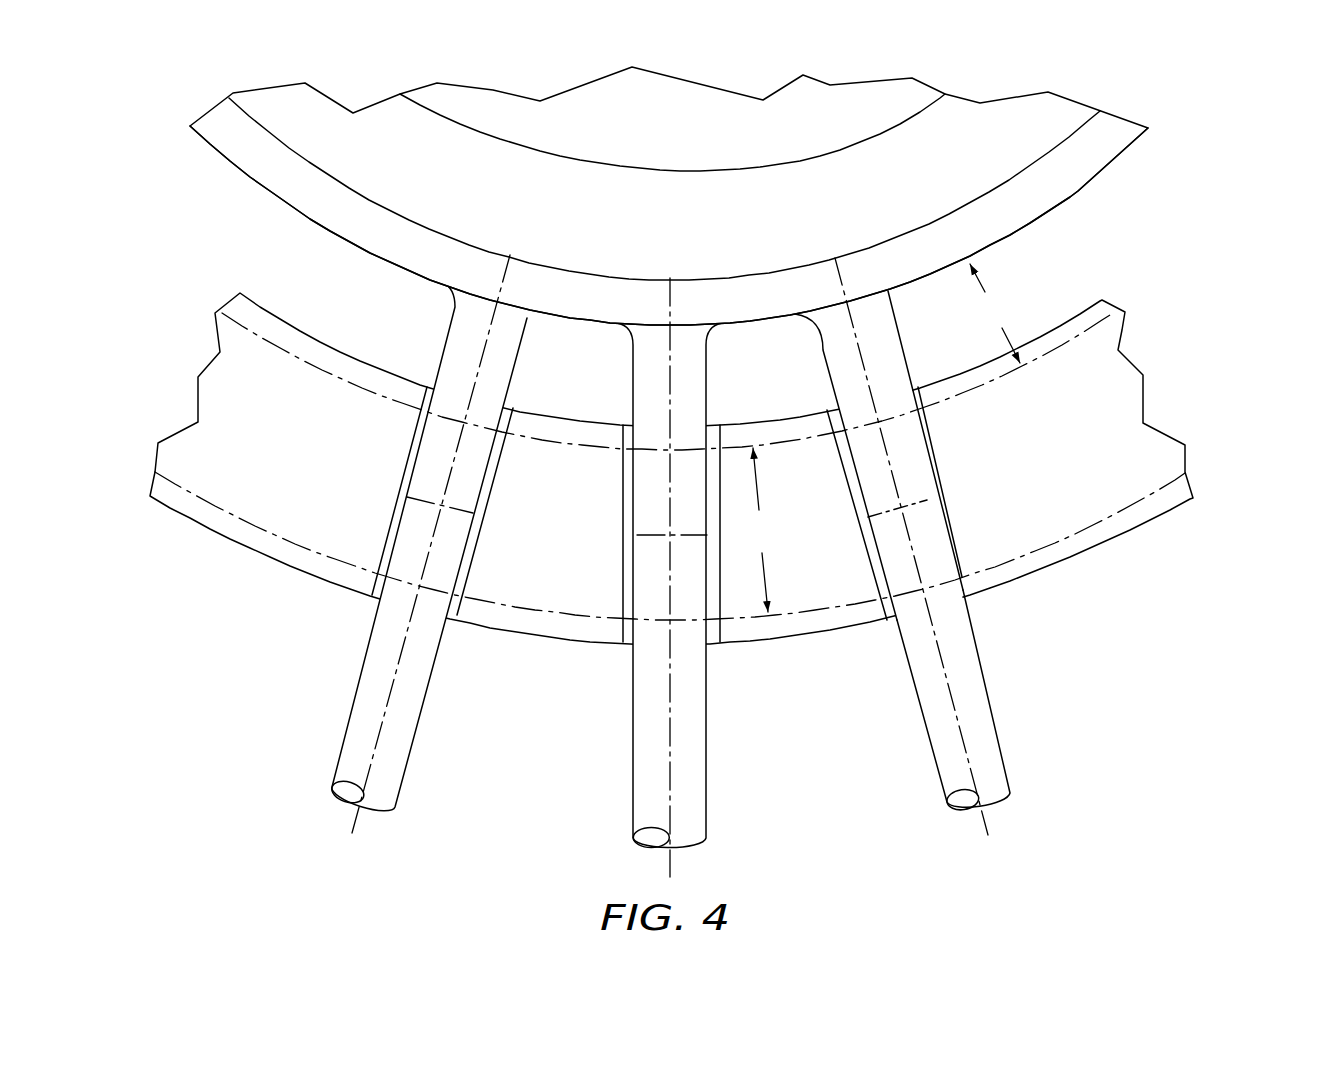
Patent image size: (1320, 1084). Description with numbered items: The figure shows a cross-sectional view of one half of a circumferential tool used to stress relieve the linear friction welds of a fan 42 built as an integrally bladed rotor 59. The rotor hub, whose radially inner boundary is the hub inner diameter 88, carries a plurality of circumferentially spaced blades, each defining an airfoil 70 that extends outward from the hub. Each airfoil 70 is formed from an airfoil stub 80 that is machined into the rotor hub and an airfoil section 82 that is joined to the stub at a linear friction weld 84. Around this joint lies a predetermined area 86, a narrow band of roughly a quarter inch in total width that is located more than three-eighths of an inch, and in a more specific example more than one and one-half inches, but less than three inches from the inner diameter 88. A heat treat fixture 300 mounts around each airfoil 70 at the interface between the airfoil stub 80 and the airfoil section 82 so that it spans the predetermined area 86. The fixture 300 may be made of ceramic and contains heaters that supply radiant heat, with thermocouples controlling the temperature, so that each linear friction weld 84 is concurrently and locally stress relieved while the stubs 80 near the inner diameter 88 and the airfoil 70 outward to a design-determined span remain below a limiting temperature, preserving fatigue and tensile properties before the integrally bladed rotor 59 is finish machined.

The fan 42 is at (705, 472).
The integrally bladed rotor 59 is at (669, 196).
The airfoil 70 is at (937, 531).
The airfoil stub 80 is at (890, 343).
The airfoil section 82 is at (978, 710).
The linear friction weld 84 is at (912, 502).
The predetermined area 86 is at (822, 488).
The hub inner diameter 88 is at (1078, 192).
The heat treat fixture 300 is at (1153, 382).